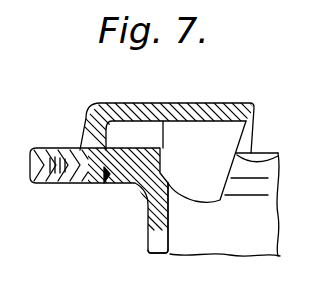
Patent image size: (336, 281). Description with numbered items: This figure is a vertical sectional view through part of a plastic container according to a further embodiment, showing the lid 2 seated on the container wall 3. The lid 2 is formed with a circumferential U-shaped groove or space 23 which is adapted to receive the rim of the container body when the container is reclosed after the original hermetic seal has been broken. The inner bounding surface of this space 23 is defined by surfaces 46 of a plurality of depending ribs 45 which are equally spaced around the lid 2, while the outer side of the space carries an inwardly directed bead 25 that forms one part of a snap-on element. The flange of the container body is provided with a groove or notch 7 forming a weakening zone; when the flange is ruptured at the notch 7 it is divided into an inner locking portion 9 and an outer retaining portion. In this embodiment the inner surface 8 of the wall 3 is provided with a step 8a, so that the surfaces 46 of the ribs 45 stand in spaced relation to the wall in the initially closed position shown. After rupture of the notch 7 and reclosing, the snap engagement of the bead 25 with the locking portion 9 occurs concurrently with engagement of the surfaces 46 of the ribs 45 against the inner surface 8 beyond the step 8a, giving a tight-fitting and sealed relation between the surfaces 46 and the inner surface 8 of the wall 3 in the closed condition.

The lid 2 is at (211, 110).
The container wall 3 is at (148, 247).
The groove or notch 7 is at (108, 183).
The inside surface of the container wall 8 is at (170, 232).
The step 8a is at (164, 181).
The inner locking portion 9 is at (126, 175).
The U-shaped groove or space 23 is at (135, 126).
The inwardly directed bead 25 is at (98, 130).
The depending ribs 45 is at (278, 160).
The surfaces of the ribs 46 is at (163, 128).